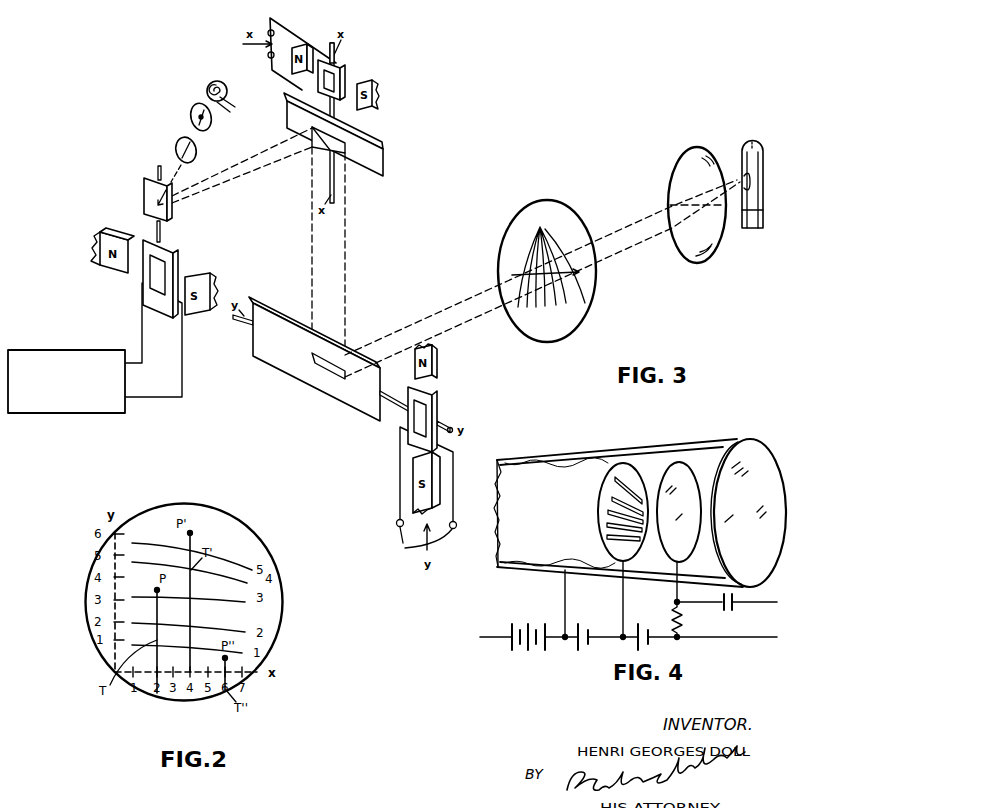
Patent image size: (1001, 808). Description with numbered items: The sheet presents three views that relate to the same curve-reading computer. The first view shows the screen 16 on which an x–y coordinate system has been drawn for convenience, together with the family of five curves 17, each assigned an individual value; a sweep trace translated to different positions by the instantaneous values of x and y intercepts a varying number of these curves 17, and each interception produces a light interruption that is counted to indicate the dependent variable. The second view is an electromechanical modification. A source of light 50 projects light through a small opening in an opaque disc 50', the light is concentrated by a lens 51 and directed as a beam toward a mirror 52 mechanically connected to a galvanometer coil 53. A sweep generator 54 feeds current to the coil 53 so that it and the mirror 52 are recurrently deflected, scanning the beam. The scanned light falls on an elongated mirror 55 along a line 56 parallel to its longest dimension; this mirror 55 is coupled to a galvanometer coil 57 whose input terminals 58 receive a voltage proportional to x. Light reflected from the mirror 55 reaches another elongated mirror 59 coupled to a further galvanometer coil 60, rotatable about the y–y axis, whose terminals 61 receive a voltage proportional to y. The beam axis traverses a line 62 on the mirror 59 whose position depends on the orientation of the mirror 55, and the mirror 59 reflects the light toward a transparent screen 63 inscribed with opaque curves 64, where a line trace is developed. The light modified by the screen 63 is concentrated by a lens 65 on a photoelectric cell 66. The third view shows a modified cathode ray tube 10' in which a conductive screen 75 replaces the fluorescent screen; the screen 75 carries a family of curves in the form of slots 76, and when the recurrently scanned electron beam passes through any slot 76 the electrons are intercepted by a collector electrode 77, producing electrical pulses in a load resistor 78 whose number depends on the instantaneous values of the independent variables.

In FIG. 4, the cathode ray tube 10' is at (640, 503).
In FIG. 2, the screen 16 is at (233, 514).
In FIG. 2, the curves 17 is at (230, 602).
In FIG. 3, the source of light 50 is at (205, 92).
In FIG. 3, the opaque disc 50' is at (188, 115).
In FIG. 3, the lens 51 is at (176, 150).
In FIG. 3, the mirror 52 is at (144, 200).
In FIG. 3, the galvanometer coil 53 is at (177, 270).
In FIG. 3, the sweep generator 54 is at (63, 413).
In FIG. 3, the elongated mirror 55 is at (365, 142).
In FIG. 3, the line 56 is at (312, 147).
In FIG. 3, the galvanometer coil 57 is at (340, 69).
In FIG. 3, the input terminals 58 is at (268, 56).
In FIG. 3, the elongated mirror 59 is at (305, 384).
In FIG. 3, the galvanometer coil 60 is at (437, 414).
In FIG. 3, the terminals 61 is at (422, 540).
In FIG. 3, the line 62 is at (344, 350).
In FIG. 3, the screen 63 is at (516, 223).
In FIG. 3, the opaque curves 64 is at (548, 259).
In FIG. 3, the lens 65 is at (678, 161).
In FIG. 3, the photoelectric cell 66 is at (745, 140).
In FIG. 4, the conductive screen 75 is at (598, 518).
In FIG. 4, the slots 76 is at (605, 526).
In FIG. 4, the collector electrode 77 is at (702, 483).
In FIG. 4, the load resistor 78 is at (672, 613).